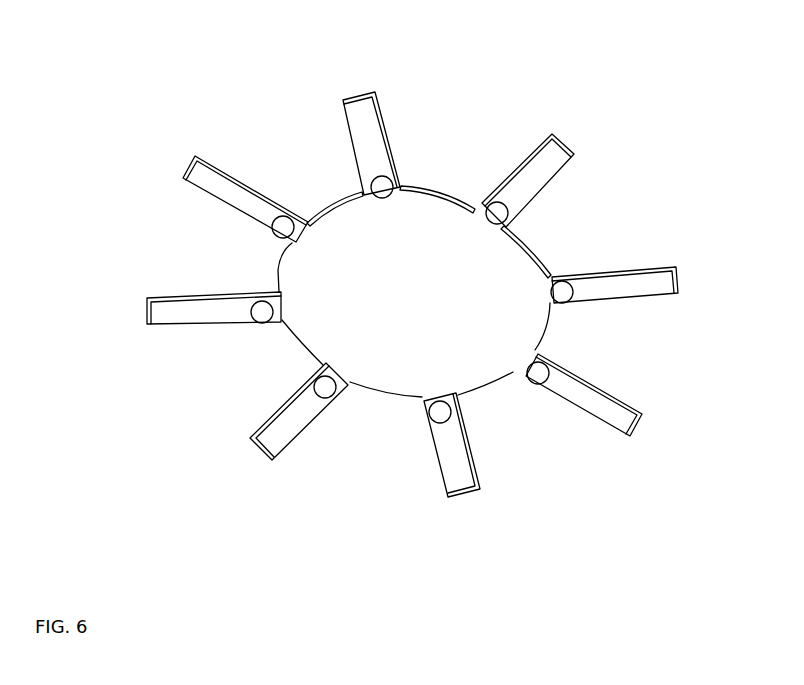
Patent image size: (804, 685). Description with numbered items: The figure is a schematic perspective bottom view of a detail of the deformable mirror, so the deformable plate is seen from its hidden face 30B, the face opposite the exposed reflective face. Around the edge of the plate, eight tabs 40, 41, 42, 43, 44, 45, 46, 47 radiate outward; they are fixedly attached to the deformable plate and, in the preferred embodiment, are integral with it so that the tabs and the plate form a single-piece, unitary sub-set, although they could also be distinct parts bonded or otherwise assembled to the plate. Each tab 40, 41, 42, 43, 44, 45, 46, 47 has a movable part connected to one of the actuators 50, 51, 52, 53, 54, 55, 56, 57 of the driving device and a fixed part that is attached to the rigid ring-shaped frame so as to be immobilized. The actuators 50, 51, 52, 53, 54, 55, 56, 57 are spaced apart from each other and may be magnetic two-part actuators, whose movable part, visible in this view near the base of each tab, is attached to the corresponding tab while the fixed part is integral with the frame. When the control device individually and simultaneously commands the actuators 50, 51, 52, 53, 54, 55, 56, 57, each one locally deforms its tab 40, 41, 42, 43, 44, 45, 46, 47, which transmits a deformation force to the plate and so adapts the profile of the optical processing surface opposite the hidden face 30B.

The hidden face 30B is at (401, 310).
The tab 40 is at (668, 284).
The tab 41 is at (641, 421).
The tab 42 is at (459, 493).
The tab 43 is at (264, 441).
The tab 44 is at (176, 312).
The tab 45 is at (205, 182).
The tab 46 is at (356, 139).
The tab 47 is at (564, 151).
The actuator 50 is at (562, 290).
The actuator 51 is at (537, 384).
The actuator 52 is at (458, 418).
The actuator 53 is at (320, 400).
The actuator 54 is at (252, 315).
The actuator 55 is at (287, 220).
The actuator 56 is at (397, 183).
The actuator 57 is at (486, 208).